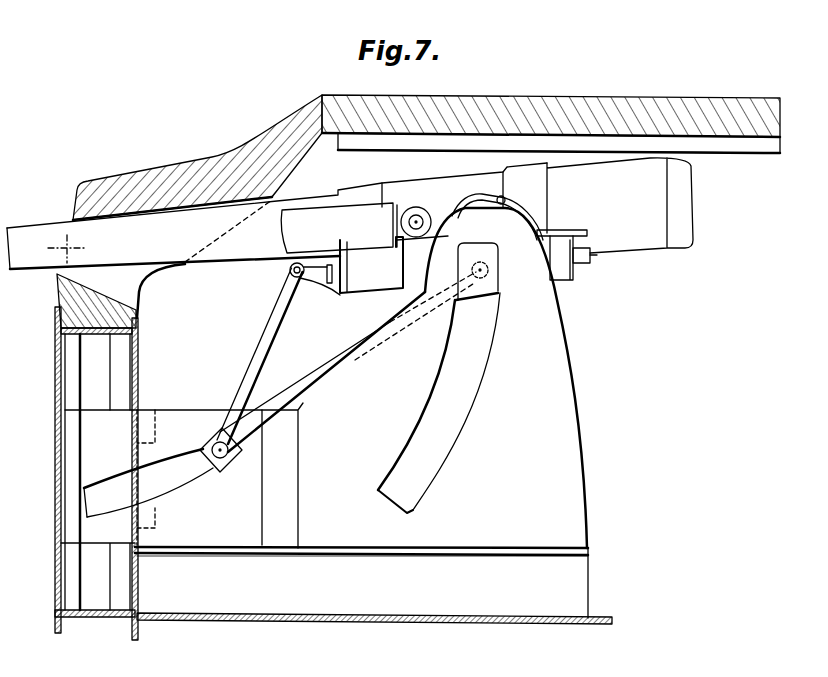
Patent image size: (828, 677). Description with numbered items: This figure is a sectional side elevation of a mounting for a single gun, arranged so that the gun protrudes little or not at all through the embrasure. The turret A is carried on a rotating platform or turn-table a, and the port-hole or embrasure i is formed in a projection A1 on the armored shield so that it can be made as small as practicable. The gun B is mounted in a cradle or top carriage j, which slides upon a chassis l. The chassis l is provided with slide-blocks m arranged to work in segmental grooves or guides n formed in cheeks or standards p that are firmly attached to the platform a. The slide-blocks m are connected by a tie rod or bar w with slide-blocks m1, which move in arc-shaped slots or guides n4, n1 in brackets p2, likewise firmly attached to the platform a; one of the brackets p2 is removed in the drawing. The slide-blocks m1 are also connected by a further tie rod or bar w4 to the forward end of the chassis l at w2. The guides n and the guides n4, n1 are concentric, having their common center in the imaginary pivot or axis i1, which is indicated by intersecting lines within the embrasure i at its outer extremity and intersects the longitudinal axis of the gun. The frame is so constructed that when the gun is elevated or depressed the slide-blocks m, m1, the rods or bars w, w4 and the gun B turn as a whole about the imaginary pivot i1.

The turret A is at (550, 125).
The projection on the armored shield A1 is at (160, 168).
The gun B is at (350, 213).
The imaginary pivot or axis i1 is at (66, 246).
The port-hole or embrasure i is at (96, 304).
The forward end connection of the chassis w2 is at (297, 277).
The tie rod or bar w4 is at (260, 356).
The tie rod or bar w is at (338, 366).
The cradle or top carriage j is at (513, 205).
The chassis l is at (468, 261).
The slide-block m is at (477, 271).
The segmental groove or guide n is at (438, 403).
The segmental slot or guide n4 is at (143, 483).
The slide-block m1 is at (203, 463).
The segmental slot or guide n1 is at (156, 492).
The cheek or standard p is at (407, 378).
The bracket p2 is at (163, 477).
The rotating platform or turn-table a is at (362, 583).